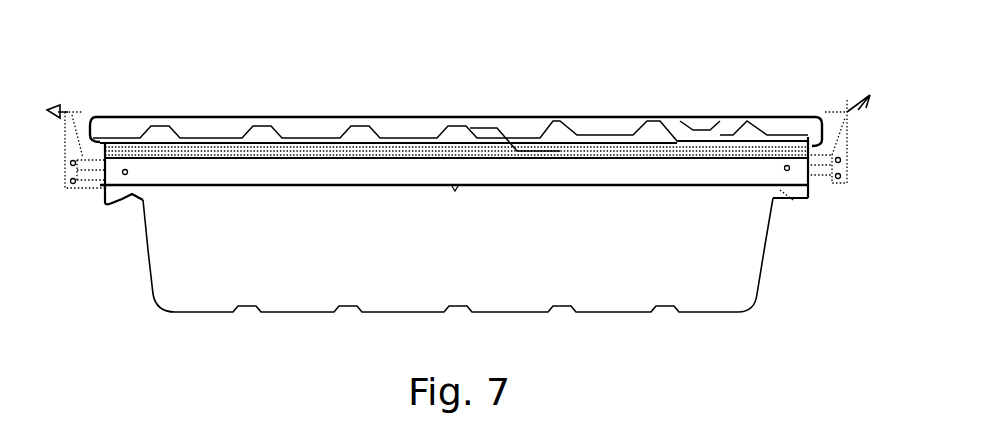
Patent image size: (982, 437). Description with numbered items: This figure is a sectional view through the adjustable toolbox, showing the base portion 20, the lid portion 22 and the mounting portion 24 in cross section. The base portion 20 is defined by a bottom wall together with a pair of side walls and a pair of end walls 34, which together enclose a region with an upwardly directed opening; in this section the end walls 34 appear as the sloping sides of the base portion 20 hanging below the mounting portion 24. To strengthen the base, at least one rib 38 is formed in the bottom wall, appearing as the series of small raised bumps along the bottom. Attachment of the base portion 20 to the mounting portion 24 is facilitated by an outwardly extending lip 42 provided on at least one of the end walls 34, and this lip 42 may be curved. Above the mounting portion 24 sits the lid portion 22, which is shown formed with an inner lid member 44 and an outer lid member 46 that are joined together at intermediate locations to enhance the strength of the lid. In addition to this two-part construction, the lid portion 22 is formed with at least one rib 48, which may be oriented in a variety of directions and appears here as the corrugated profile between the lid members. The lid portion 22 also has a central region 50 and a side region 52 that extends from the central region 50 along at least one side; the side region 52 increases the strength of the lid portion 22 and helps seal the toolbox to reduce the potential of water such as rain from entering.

The base portion 20 is at (488, 302).
The lid portion 22 is at (708, 117).
The mounting portion 24 is at (167, 192).
The end walls 34 is at (759, 258).
The rib 38 is at (249, 313).
The outwardly extending lip 42 is at (772, 190).
The inner lid member 44 is at (592, 138).
The outer lid member 46 is at (603, 115).
The rib 48 is at (542, 130).
The central region 50 is at (297, 115).
The side region 52 is at (93, 126).